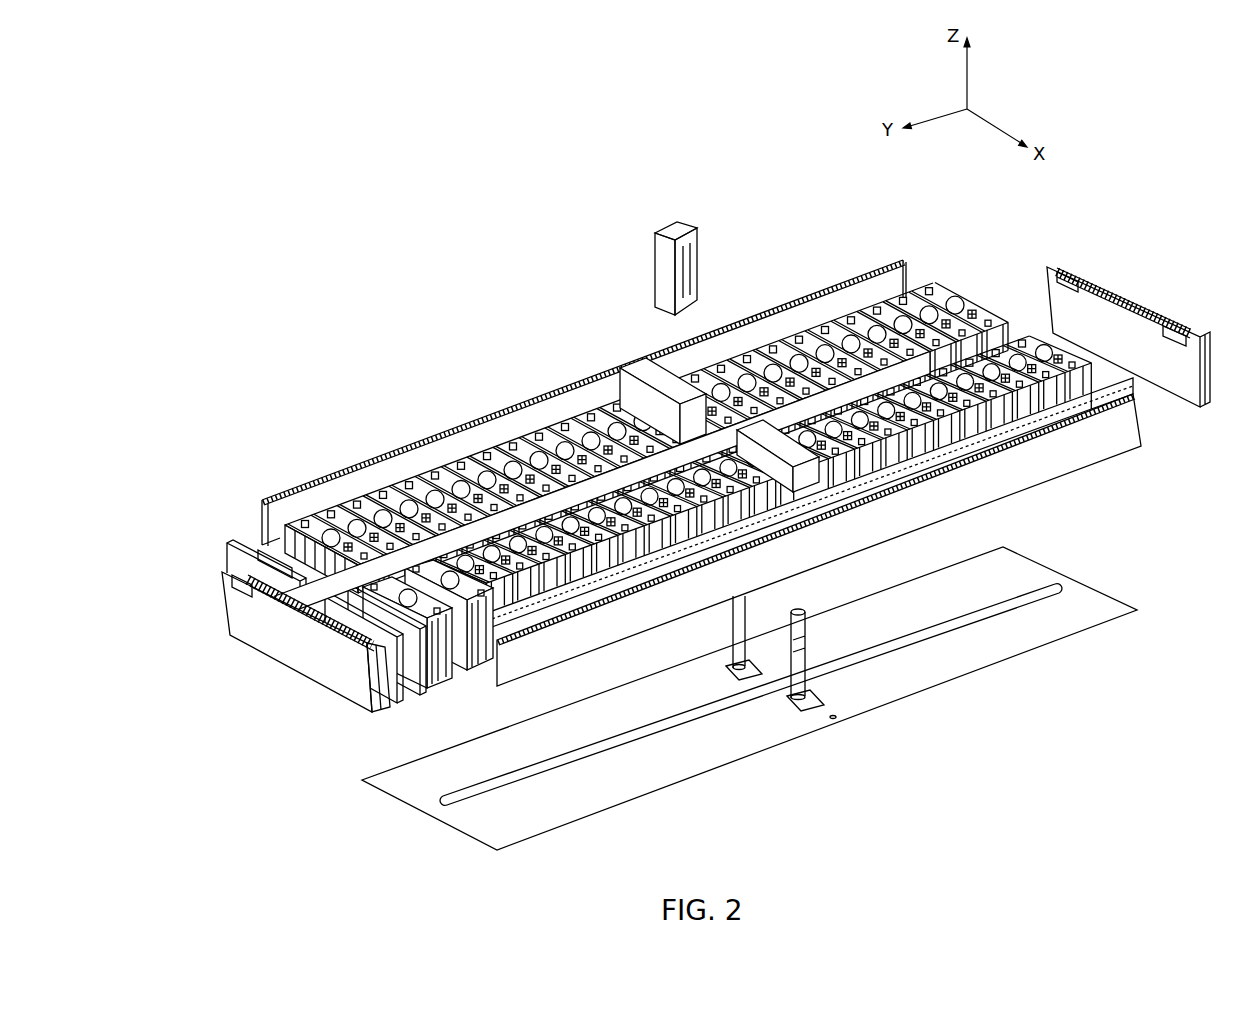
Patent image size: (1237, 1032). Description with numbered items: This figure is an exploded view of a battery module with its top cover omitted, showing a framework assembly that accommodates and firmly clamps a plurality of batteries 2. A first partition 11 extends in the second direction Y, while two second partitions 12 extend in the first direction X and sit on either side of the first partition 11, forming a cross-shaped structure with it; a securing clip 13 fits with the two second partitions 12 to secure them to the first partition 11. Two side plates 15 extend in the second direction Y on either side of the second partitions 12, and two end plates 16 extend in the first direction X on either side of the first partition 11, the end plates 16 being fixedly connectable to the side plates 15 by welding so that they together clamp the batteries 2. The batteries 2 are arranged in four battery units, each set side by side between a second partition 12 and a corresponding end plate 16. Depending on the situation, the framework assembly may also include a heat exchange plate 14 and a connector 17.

The battery 2 is at (967, 288).
The first partition 11 is at (835, 393).
The second partition 12 is at (603, 398).
The securing clip 13 is at (660, 272).
The heat exchange plate 14 is at (718, 768).
The side plate 15 is at (487, 414).
The end plate 16 is at (284, 643).
The connector 17 is at (713, 659).